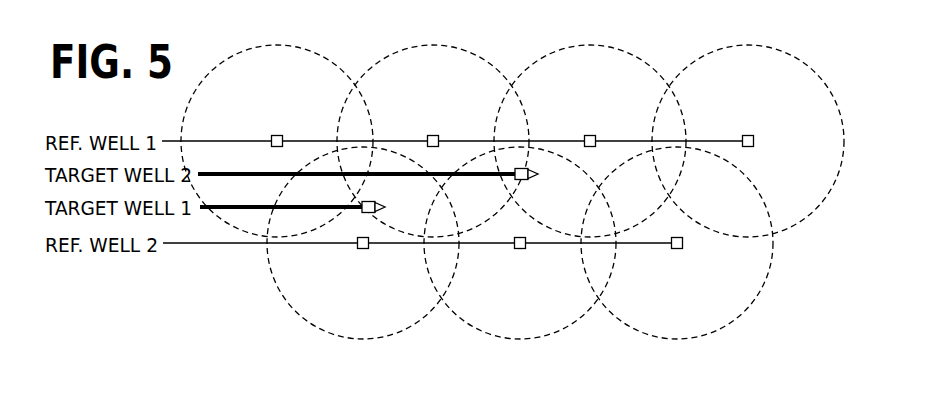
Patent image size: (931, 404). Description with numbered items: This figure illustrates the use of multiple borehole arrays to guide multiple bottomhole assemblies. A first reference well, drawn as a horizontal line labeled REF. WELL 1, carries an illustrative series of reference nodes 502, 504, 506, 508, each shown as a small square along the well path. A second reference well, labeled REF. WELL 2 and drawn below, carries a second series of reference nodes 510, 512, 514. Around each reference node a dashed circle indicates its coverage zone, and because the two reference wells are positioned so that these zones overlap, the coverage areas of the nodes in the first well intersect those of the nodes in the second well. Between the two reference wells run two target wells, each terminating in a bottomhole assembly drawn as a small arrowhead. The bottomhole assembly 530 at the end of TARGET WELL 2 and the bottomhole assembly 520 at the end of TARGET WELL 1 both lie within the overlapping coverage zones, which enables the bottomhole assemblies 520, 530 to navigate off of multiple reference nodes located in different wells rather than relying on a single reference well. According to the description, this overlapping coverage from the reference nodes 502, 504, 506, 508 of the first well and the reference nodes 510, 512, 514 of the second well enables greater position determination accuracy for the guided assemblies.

The reference node 502 is at (270, 145).
The reference node 504 is at (444, 127).
The reference node 506 is at (590, 135).
The reference node 508 is at (750, 135).
The reference node 510 is at (364, 249).
The reference node 512 is at (521, 249).
The reference node 514 is at (680, 249).
The bottomhole assembly 520 is at (376, 204).
The bottomhole assembly 530 is at (516, 178).